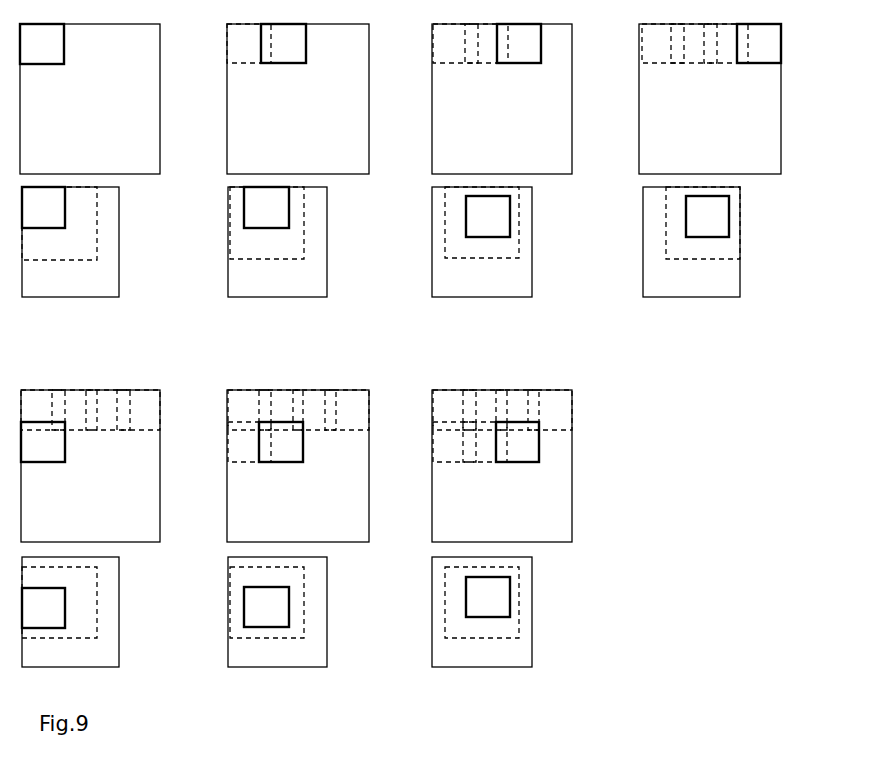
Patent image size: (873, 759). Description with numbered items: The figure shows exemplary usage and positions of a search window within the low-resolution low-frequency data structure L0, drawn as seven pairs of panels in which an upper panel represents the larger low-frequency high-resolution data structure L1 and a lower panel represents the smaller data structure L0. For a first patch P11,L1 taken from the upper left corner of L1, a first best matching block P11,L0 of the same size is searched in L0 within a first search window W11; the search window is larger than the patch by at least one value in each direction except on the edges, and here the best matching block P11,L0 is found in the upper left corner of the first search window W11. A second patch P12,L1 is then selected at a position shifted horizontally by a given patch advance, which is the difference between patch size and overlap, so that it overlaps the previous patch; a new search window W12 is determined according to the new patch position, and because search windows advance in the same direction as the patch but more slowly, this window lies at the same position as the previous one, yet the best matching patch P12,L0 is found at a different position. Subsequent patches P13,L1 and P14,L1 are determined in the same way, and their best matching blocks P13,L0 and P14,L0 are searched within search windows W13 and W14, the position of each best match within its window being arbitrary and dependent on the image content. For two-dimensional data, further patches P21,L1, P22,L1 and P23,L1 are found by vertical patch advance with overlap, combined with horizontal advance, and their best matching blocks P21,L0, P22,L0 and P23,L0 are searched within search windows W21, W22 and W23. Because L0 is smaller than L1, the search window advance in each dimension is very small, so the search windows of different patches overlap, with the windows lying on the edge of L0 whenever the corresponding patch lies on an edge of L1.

The low-frequency high-resolution data structure L1 is at (400, 283).
The low-resolution low-frequency data structure L0 is at (381, 427).
The first patch P11,L1 is at (61, 60).
The second patch P12,L1 is at (295, 60).
The subsequent patch P13,L1 is at (522, 60).
The subsequent patch P14,L1 is at (754, 60).
The subsequent patch P21,L1 is at (49, 458).
The subsequent patch P22,L1 is at (288, 458).
The subsequent patch P23,L1 is at (525, 458).
The first best matching block P11,L0 is at (67, 209).
The best matching patch P12,L0 is at (289, 209).
The best matching block P13,L0 is at (510, 217).
The best matching block P14,L0 is at (729, 218).
The best matching block P21,L0 is at (65, 599).
The best matching block P22,L0 is at (289, 599).
The best matching block P23,L0 is at (510, 599).
The first search window W11 is at (97, 247).
The search window W12 is at (304, 247).
The search window W13 is at (519, 249).
The search window W14 is at (710, 260).
The search window W21 is at (97, 617).
The search window W22 is at (304, 625).
The search window W23 is at (519, 628).